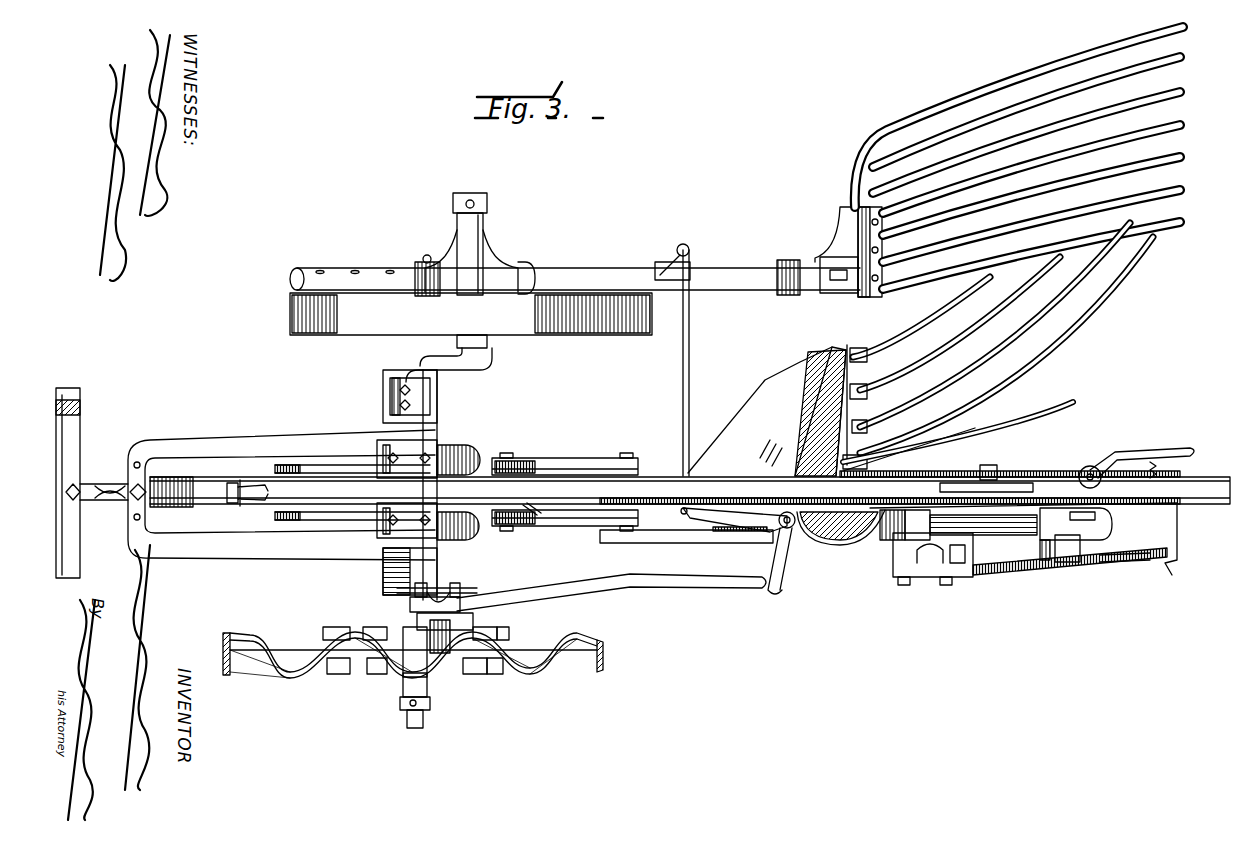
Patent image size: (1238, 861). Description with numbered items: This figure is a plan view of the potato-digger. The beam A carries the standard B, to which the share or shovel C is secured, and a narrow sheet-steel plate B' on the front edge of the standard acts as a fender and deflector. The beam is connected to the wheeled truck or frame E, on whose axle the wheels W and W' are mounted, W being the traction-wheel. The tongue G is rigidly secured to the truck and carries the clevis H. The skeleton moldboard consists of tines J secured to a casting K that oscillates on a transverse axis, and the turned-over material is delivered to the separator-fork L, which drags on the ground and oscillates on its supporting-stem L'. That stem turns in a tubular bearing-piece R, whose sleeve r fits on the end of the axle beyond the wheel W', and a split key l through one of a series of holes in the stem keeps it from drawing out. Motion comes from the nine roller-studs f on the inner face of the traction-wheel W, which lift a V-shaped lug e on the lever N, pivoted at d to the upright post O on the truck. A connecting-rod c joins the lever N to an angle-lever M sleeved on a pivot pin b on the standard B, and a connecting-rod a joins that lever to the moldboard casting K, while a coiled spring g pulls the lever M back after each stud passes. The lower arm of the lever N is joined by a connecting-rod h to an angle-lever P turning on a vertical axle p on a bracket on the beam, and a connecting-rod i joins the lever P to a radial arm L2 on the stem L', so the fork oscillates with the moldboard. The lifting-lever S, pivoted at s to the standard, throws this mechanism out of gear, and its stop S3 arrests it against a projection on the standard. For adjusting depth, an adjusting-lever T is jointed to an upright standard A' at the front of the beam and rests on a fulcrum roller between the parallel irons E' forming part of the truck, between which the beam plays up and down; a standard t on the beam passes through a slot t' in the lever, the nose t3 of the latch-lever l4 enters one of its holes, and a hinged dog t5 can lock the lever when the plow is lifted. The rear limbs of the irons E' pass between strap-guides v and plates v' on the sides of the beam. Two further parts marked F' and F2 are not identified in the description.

The beam A is at (690, 467).
The upright standard A' is at (247, 454).
The standard B is at (1017, 552).
The sheet-steel plate B' is at (841, 556).
The share C is at (767, 411).
The truck E is at (426, 485).
The vertical parallel irons E' is at (352, 492).
The bent pipe F' is at (460, 358).
The bearing boss F2 is at (480, 472).
The tongue G is at (180, 492).
The clevis H is at (237, 543).
The tines J is at (972, 283).
The casting K is at (868, 452).
The separator-fork L is at (999, 162).
The supporting-stem L' is at (793, 264).
The radial arm L2 is at (668, 255).
The angle-lever M is at (993, 567).
The lever N is at (463, 597).
The supporting-post O is at (383, 578).
The angle-lever P is at (770, 556).
The tubular bearing-piece R is at (500, 260).
The lifting-lever S is at (1023, 567).
The stop S3 is at (1047, 545).
The adjusting-lever T is at (560, 487).
The traction-wheel W is at (438, 677).
The wheel W' is at (471, 328).
The connecting-rod a is at (1082, 468).
The pivot pin b is at (907, 580).
The connecting-rod c is at (650, 573).
The pivot d is at (440, 565).
The V-shaped lug e is at (477, 620).
The roller-studs f is at (377, 628).
The coiled spring g is at (1073, 543).
The connecting-rod h is at (690, 588).
The connecting-rod i is at (689, 385).
The split key l is at (427, 262).
The latch-lever l4 is at (1140, 452).
The vertical axle p is at (735, 530).
The sleeve r is at (467, 223).
The pivot s is at (1100, 556).
The upright standard t is at (1008, 463).
The vertical slot t' is at (1049, 463).
The nose t3 is at (987, 465).
The hinged dog t5 is at (530, 517).
The strap-guides v is at (600, 489).
The metallic plates v' is at (608, 481).